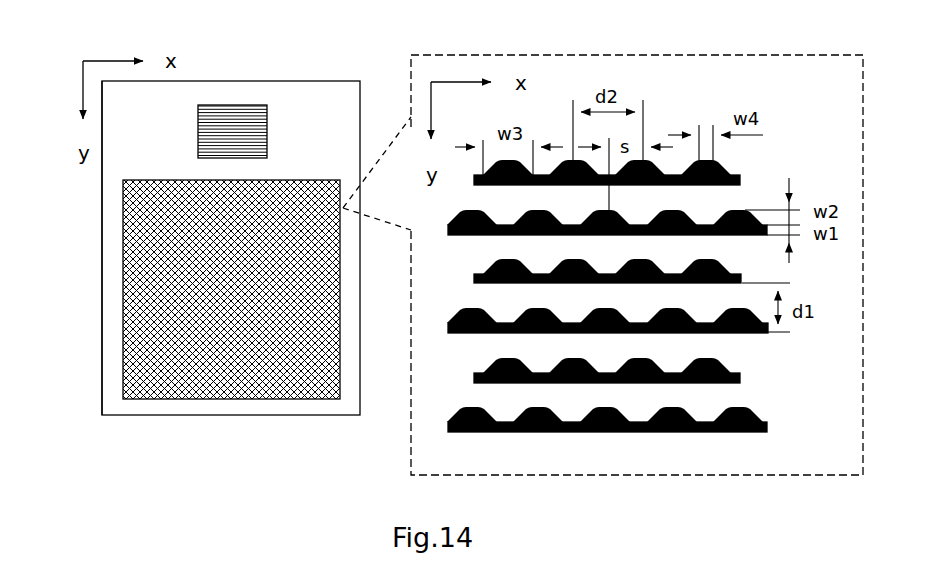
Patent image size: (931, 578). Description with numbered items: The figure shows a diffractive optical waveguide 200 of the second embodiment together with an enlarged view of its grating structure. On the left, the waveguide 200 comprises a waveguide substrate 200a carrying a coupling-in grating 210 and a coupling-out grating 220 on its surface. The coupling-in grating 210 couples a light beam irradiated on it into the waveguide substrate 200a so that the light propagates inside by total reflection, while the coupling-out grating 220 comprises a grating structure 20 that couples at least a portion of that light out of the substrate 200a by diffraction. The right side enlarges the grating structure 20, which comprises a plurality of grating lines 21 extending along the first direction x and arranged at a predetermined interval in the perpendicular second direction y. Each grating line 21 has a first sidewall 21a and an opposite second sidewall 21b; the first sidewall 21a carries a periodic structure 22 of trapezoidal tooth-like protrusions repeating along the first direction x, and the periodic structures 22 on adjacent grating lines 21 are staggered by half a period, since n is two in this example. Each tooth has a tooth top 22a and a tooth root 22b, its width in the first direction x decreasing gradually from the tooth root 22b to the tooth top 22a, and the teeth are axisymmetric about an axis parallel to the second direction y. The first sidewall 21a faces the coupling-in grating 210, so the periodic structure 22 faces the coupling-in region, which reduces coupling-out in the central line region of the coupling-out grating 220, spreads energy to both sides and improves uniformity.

The diffractive optical waveguide 200 is at (222, 43).
The waveguide substrate 200a is at (100, 330).
The coupling-in grating 210 is at (198, 128).
The coupling-out grating 220 is at (123, 258).
The grating structure 20 is at (563, 40).
The grating line 21 is at (743, 178).
The first sidewall 21a is at (764, 404).
The second sidewall 21b is at (732, 444).
The periodic structure 22 is at (631, 420).
The tooth top 22a is at (478, 310).
The tooth root 22b is at (455, 322).